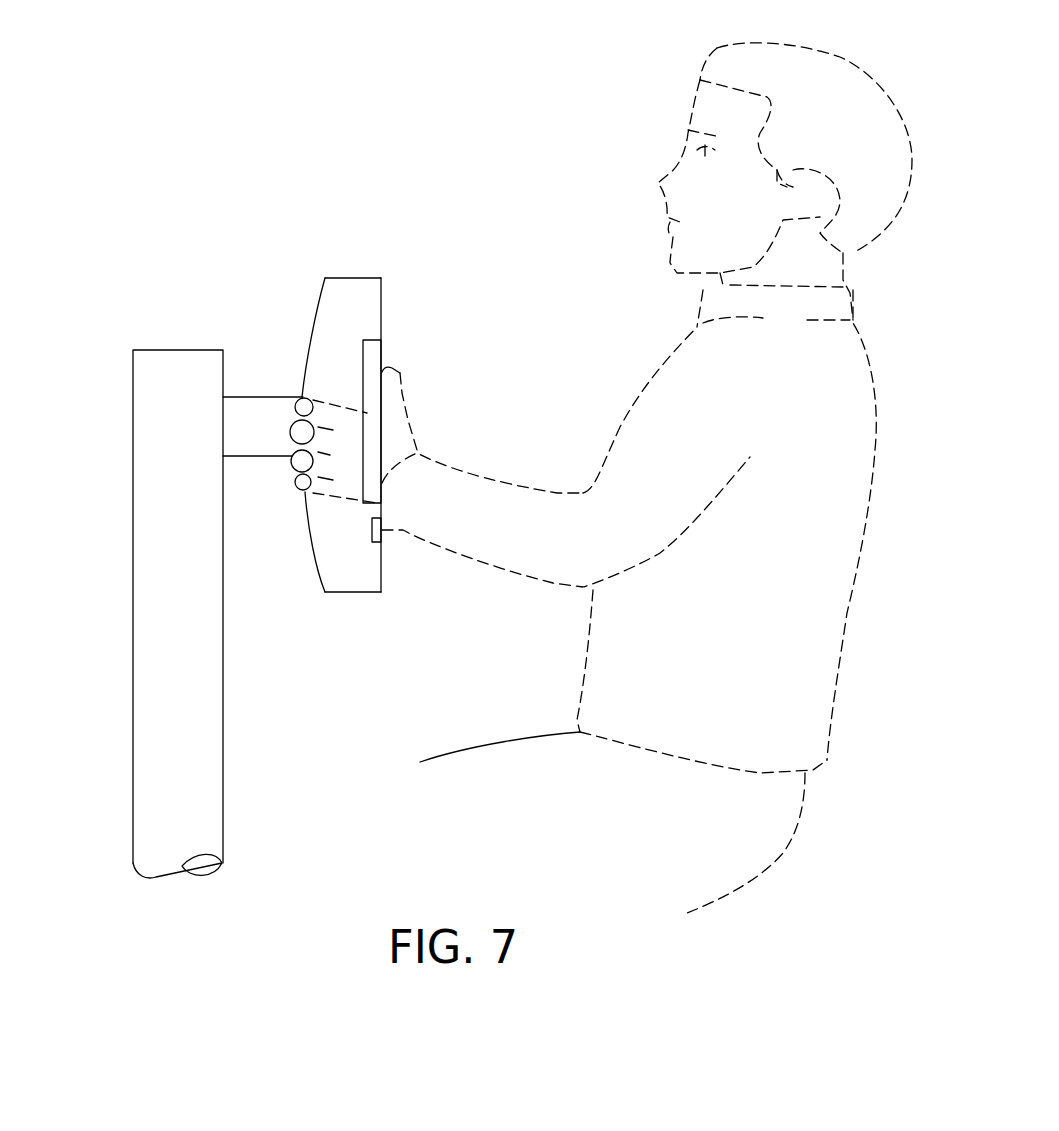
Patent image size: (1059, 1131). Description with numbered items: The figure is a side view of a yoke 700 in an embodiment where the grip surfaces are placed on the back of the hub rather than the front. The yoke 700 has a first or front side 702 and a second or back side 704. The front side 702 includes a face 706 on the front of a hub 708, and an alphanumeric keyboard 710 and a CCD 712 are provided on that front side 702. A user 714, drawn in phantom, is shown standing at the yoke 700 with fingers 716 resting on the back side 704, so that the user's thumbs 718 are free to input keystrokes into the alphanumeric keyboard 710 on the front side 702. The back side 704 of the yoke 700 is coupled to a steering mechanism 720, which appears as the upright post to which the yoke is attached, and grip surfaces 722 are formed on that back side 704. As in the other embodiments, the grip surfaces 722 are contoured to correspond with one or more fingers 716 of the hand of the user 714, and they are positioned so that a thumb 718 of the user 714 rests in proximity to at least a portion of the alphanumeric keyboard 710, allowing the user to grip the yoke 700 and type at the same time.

The yoke 700 is at (312, 270).
The first or front side 702 is at (382, 287).
The second or back side 704 is at (305, 345).
The face 706 is at (383, 580).
The hub 708 is at (346, 282).
The alphanumeric keyboard 710 is at (378, 350).
The CCD 712 is at (385, 530).
The user 714 is at (717, 48).
The fingers 716 is at (302, 487).
The thumbs 718 is at (405, 398).
The steering mechanism 720 is at (133, 565).
The grip surfaces 722 is at (295, 417).